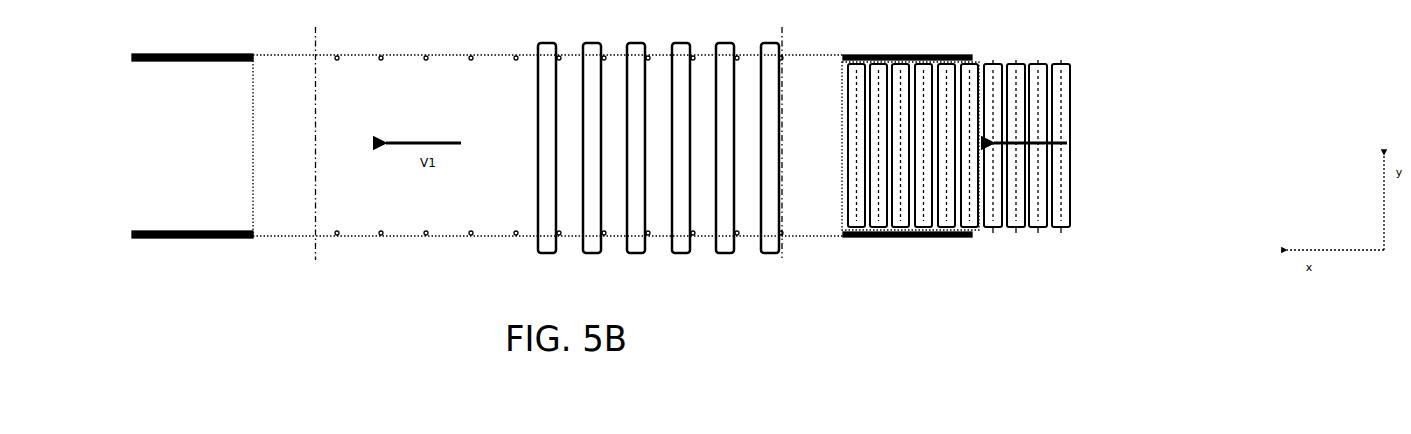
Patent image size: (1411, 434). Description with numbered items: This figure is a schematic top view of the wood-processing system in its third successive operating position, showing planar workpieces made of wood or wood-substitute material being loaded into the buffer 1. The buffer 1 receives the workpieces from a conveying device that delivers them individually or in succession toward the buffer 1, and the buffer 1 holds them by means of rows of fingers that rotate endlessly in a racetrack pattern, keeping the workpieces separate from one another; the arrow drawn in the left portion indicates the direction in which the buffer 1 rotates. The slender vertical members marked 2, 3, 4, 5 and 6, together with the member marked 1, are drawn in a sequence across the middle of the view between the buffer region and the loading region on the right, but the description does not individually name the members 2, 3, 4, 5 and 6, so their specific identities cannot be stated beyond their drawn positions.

The buffer 1 is at (547, 148).
The slat 2 is at (592, 148).
The slat 3 is at (636, 148).
The slat 4 is at (681, 148).
The slat 5 is at (725, 148).
The slat 6 is at (770, 148).